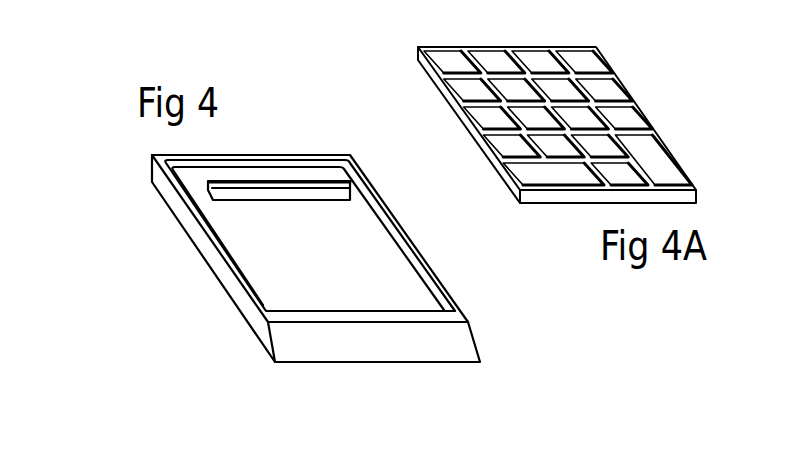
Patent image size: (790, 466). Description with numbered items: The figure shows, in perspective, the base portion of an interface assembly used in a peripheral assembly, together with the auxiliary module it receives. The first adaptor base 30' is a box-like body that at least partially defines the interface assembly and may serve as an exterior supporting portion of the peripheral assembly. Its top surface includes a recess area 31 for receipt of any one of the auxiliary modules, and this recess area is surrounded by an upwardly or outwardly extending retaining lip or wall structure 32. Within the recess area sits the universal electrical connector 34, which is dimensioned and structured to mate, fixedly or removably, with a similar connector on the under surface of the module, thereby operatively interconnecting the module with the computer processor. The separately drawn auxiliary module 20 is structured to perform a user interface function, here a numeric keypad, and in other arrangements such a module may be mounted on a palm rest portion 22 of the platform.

In FIG. 4A, the auxiliary module 20 is at (632, 90).
In FIG. 4, the palm rest portion 22 is at (248, 0).
In FIG. 4, the first adaptor base 30' is at (255, 253).
In FIG. 4, the recess area 31 is at (292, 287).
In FIG. 4, the retaining lip or wall structure 32 is at (428, 281).
In FIG. 4, the electrical connector 34 is at (286, 200).